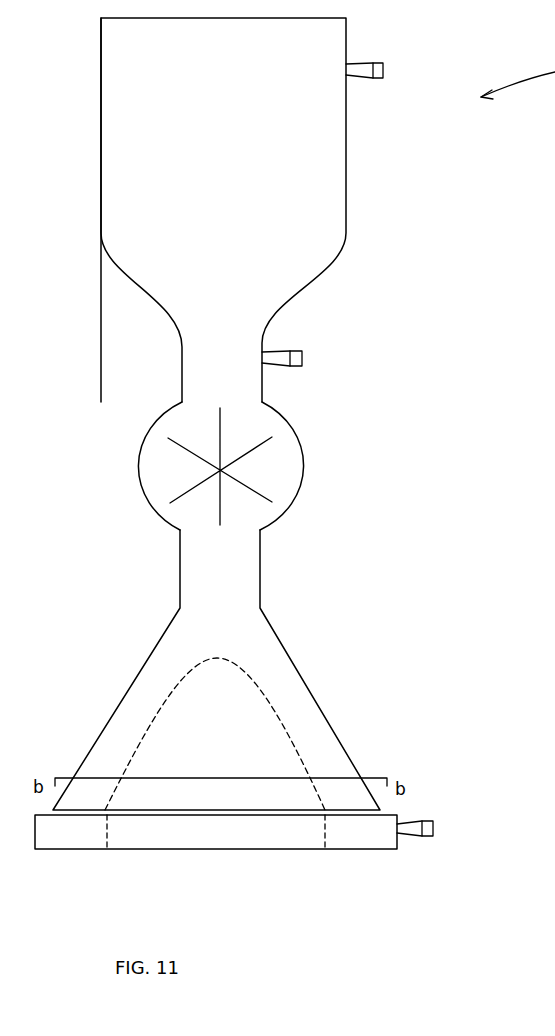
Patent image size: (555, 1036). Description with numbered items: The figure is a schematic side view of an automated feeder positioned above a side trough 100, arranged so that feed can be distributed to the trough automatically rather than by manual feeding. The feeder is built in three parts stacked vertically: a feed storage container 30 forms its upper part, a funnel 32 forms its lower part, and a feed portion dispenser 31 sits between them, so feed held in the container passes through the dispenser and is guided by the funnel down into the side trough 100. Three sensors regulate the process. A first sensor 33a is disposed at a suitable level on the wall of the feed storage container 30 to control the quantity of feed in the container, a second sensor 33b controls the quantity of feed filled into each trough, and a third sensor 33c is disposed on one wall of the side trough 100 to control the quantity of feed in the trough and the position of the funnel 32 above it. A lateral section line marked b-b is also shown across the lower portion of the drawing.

The feed storage container 30 is at (258, 128).
The feed portion dispenser 31 is at (263, 457).
The funnel 32 is at (280, 698).
The first sensor 33a is at (372, 65).
The second sensor 33b is at (292, 352).
The third sensor 33c is at (413, 822).
The side trough 100 is at (230, 840).